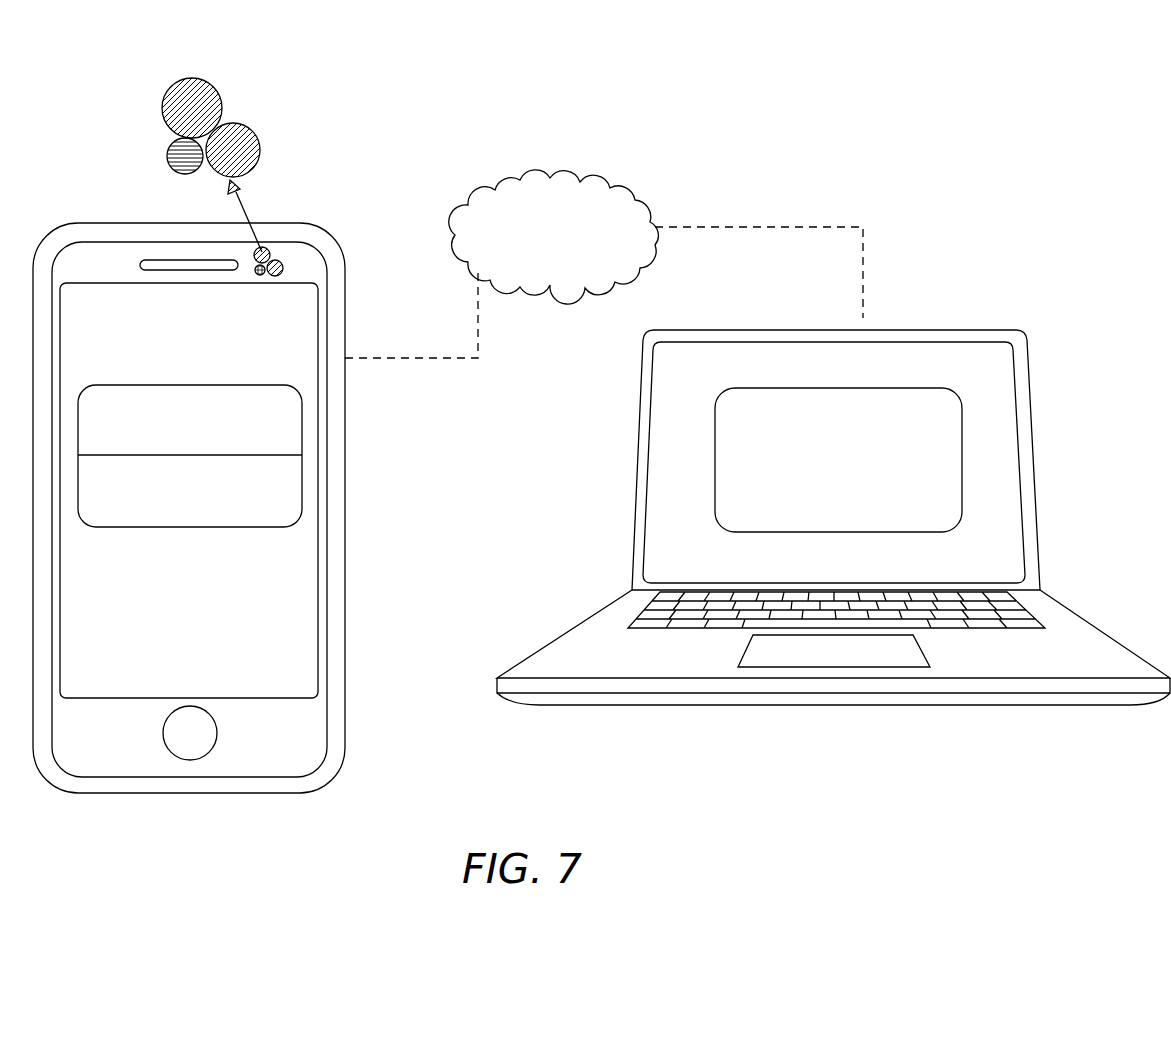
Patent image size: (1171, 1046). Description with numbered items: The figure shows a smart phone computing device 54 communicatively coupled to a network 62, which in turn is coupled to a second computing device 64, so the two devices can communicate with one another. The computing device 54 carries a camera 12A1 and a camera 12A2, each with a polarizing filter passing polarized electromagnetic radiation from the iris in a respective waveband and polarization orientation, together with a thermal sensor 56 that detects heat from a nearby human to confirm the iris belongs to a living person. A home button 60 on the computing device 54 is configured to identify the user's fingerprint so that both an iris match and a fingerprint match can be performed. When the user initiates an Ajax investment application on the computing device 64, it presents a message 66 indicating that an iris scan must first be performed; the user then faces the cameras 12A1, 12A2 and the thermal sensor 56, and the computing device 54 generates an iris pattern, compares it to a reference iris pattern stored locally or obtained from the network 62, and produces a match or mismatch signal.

The camera 12A1 is at (215, 88).
The camera 12A2 is at (260, 150).
The thermal sensor 56 is at (167, 157).
The computing device 54 is at (345, 278).
The home button 60 is at (218, 730).
The network 62 is at (544, 260).
The computing device 64 is at (1030, 350).
The message 66 is at (962, 440).